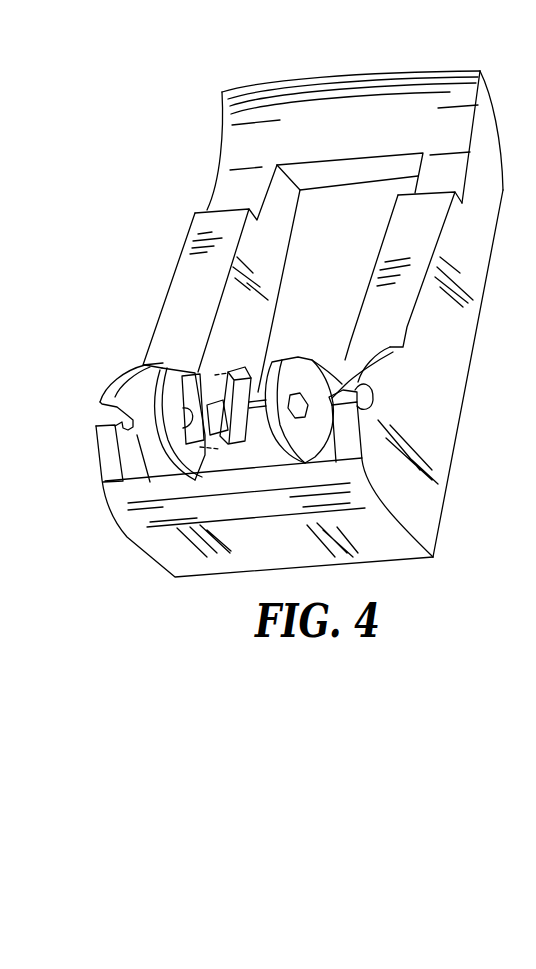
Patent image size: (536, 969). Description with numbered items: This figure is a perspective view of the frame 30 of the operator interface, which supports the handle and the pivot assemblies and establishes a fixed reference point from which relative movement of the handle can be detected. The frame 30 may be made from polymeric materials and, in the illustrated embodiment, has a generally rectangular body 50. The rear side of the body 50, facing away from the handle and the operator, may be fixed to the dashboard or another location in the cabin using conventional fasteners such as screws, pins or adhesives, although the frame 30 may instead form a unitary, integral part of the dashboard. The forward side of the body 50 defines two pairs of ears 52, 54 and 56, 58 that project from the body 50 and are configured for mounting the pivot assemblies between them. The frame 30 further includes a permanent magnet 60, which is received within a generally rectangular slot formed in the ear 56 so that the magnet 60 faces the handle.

The frame 30 is at (140, 285).
The body 50 is at (487, 188).
The ear 52 is at (311, 377).
The ear 54 is at (400, 378).
The ear 56 is at (182, 462).
The ear 58 is at (330, 203).
The permanent magnet 60 is at (245, 380).